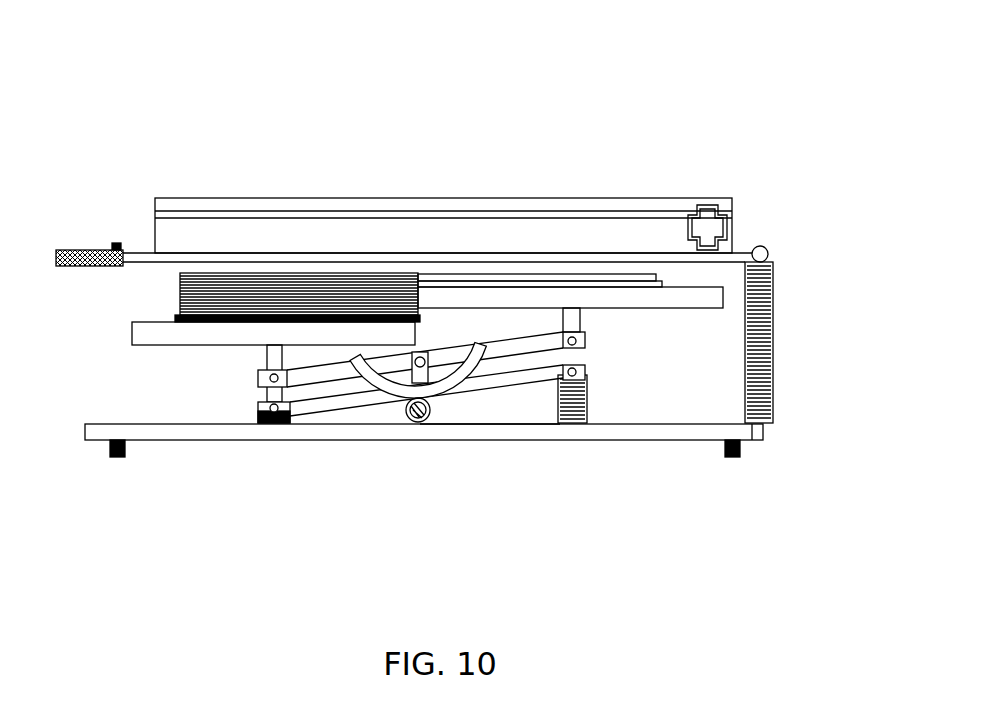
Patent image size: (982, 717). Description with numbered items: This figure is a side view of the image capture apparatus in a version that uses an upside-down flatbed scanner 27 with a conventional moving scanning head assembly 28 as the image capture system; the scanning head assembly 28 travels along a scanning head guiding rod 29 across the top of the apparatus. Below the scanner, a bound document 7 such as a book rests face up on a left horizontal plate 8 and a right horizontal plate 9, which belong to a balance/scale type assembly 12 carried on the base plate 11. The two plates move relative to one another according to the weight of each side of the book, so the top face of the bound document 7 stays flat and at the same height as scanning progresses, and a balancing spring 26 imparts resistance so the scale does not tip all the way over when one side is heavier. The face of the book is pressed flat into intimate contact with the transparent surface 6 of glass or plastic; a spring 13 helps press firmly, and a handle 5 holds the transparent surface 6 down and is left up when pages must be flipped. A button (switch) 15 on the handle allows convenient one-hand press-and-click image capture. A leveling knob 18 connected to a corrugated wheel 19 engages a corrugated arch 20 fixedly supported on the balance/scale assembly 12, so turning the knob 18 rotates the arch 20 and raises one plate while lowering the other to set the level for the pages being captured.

The handle 5 is at (68, 238).
The button (switch) 15 is at (111, 220).
The upside/down flatbed scanner 27 is at (220, 160).
The scanning head guiding rod 29 is at (347, 197).
The moving scanning head assembly 28 is at (707, 196).
The transparent surface 6 is at (745, 242).
The spring 13 is at (787, 285).
The bound document 7 is at (170, 292).
The right horizontal plate 9 is at (128, 333).
The left horizontal plate 8 is at (687, 315).
The balance/scale type assembly 12 is at (598, 343).
The corrugated arch 20 is at (365, 394).
The corrugated wheel 19 is at (403, 422).
The leveling knob 18 is at (431, 428).
The base plate 11 is at (545, 445).
The balancing spring 26 is at (597, 407).